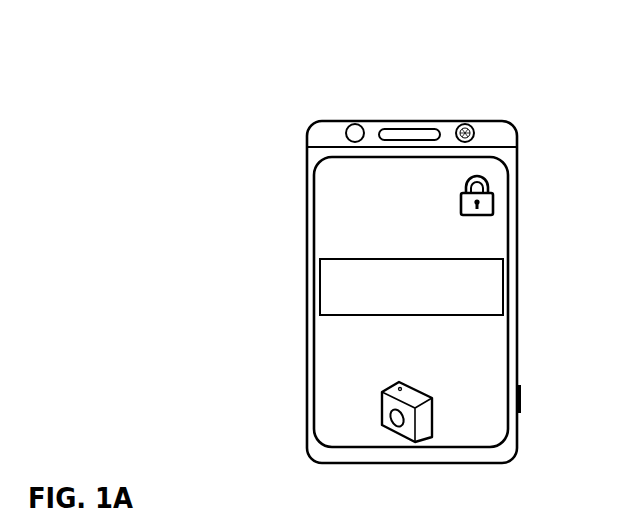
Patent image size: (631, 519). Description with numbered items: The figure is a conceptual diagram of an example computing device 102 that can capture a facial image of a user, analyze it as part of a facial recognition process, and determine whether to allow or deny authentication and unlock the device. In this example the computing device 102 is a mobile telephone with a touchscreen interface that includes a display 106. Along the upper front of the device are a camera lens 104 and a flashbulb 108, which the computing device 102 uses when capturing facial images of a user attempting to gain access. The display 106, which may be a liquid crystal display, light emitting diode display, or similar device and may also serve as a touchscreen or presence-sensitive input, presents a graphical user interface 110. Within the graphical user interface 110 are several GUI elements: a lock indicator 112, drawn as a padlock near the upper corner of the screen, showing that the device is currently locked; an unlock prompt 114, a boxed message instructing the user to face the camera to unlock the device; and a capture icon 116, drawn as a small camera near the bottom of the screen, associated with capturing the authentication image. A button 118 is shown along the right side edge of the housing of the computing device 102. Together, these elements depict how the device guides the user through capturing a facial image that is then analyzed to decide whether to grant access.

The computing device 102 is at (283, 76).
The camera lens 104 is at (470, 125).
The display 106 is at (315, 201).
The flashbulb 108 is at (355, 124).
The graphical user interface 110 is at (347, 245).
The lock indicator 112 is at (493, 192).
The unlock prompt 114 is at (502, 259).
The capture icon 116 is at (382, 394).
The button 118 is at (521, 403).